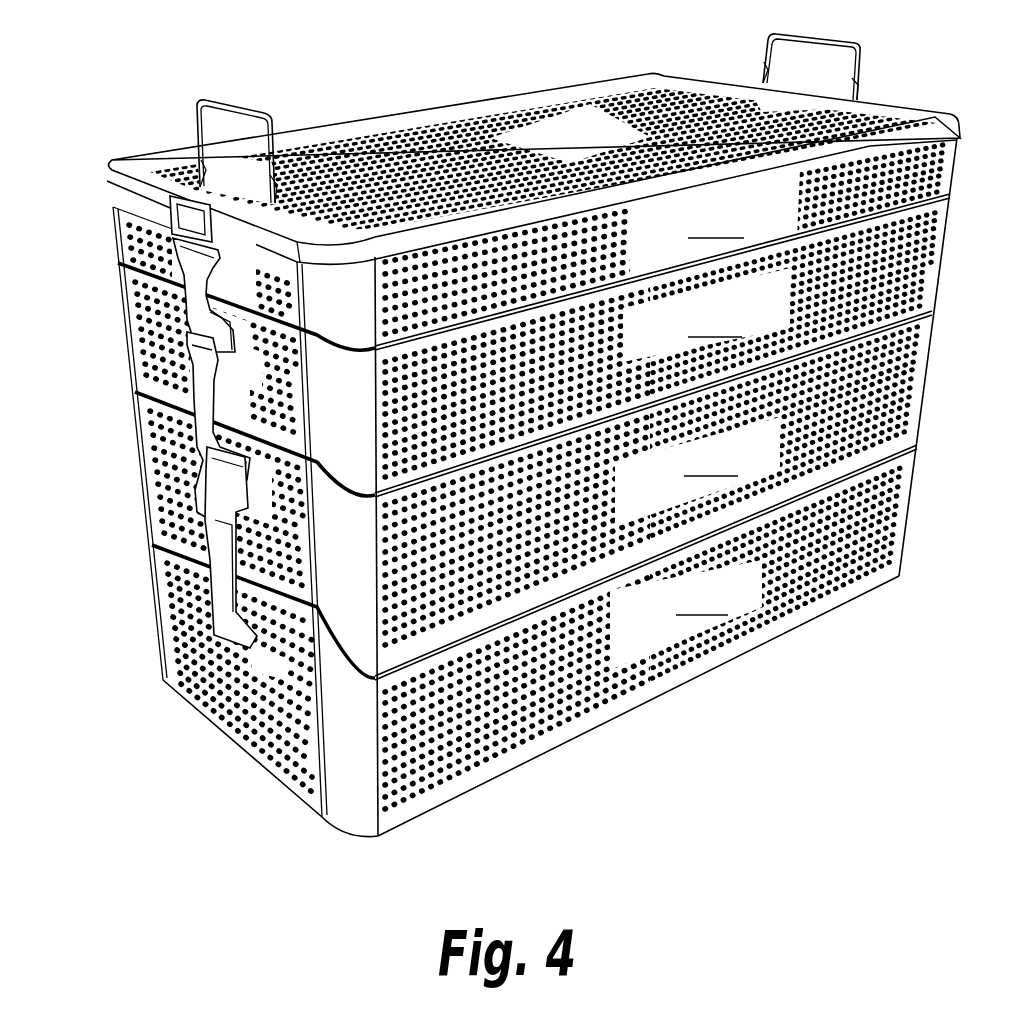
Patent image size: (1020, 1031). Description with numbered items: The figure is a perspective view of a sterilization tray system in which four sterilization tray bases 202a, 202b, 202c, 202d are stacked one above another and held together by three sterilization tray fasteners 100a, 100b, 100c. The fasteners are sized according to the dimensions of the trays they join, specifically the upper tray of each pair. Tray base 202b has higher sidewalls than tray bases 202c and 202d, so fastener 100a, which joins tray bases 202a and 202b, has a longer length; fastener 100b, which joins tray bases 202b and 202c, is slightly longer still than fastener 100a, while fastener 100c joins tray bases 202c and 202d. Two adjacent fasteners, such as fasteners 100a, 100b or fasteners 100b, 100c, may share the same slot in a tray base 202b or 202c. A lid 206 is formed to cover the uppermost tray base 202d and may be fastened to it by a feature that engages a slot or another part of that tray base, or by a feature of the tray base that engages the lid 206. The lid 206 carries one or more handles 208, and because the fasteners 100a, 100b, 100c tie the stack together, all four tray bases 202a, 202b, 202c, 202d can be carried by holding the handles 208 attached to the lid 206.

The lid 206 is at (590, 105).
The handles 208 is at (246, 98).
The sterilization tray base 202a is at (534, 651).
The sterilization tray base 202b is at (536, 502).
The sterilization tray base 202c is at (536, 354).
The sterilization tray base 202d is at (531, 247).
The sterilization tray fastener 100a is at (212, 540).
The sterilization tray fastener 100b is at (194, 393).
The sterilization tray fastener 100c is at (170, 262).